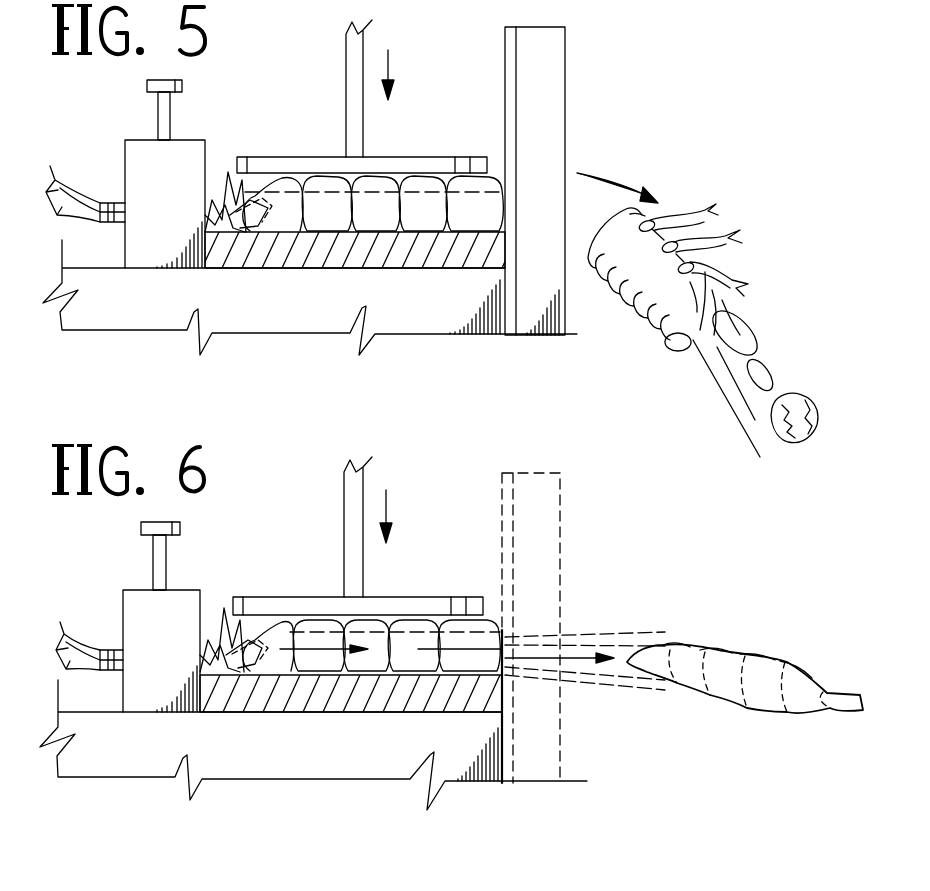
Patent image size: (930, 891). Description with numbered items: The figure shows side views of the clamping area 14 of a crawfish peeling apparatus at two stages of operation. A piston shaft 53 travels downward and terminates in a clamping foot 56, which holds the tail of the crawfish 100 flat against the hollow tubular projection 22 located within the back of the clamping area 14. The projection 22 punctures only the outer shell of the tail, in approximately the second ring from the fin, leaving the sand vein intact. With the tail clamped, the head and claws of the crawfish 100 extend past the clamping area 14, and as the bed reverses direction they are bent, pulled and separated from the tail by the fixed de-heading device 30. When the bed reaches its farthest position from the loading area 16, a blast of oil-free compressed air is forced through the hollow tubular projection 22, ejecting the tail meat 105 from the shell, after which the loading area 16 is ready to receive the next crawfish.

In FIG. 5, the clamping area 14 is at (398, 255).
In FIG. 6, the clamping area 14 is at (350, 700).
In FIG. 5, the loading area 16 is at (271, 316).
In FIG. 6, the loading area 16 is at (271, 757).
In FIG. 5, the hollow tubular projection 22 is at (207, 193).
In FIG. 6, the hollow tubular projection 22 is at (205, 645).
In FIG. 5, the de-heading device 30 is at (535, 150).
In FIG. 6, the de-heading device 30 is at (534, 603).
In FIG. 5, the piston shaft 53 is at (350, 83).
In FIG. 6, the piston shaft 53 is at (348, 518).
In FIG. 5, the clamping foot 56 is at (323, 166).
In FIG. 6, the clamping foot 56 is at (315, 608).
In FIG. 5, the crawfish 100 is at (752, 240).
In FIG. 6, the tail meat 105 is at (753, 649).